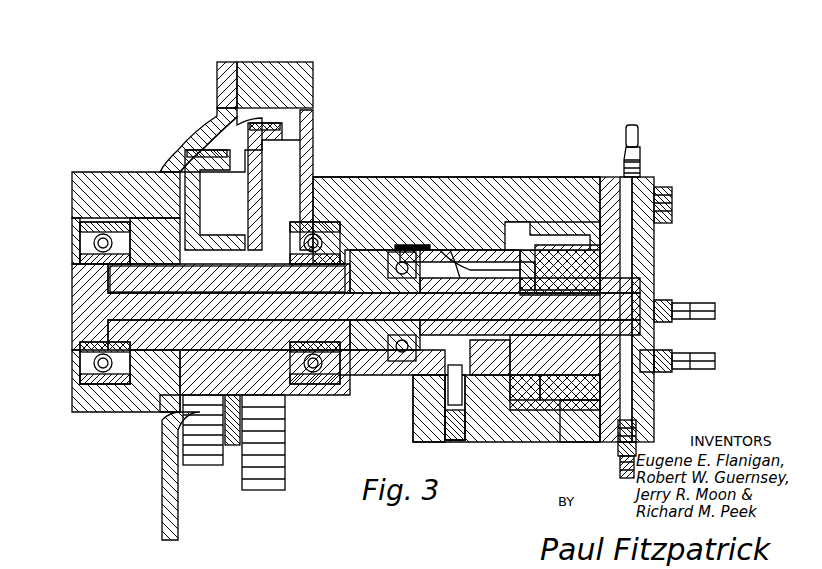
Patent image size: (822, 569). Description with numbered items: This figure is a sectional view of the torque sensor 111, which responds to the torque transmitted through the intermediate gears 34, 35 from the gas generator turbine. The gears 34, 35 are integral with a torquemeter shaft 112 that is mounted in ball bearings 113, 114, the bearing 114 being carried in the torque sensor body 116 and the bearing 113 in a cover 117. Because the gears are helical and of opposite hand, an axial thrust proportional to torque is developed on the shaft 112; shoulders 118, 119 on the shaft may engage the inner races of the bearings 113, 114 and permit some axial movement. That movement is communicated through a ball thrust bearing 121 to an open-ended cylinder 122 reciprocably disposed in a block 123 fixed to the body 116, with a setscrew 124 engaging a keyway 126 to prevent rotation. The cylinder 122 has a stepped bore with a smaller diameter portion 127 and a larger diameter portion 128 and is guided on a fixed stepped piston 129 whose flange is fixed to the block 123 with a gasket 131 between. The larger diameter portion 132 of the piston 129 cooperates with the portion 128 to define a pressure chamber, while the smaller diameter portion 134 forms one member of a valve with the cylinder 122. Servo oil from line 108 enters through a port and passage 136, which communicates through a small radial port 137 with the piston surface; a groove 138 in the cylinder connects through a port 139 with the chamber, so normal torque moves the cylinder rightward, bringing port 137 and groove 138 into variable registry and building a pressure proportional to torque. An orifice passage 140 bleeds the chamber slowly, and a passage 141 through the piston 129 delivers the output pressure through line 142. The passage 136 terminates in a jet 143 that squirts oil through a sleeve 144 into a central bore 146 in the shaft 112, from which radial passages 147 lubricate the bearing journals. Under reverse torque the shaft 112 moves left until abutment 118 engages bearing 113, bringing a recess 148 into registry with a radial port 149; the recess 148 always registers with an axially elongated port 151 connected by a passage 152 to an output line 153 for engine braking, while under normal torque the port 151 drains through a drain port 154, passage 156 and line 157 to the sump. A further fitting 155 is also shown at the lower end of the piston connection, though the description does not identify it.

The intermediate gear 34 is at (200, 140).
The intermediate gear 35 is at (285, 128).
The line 108 is at (715, 311).
The torque sensor 111 is at (204, 98).
The torquemeter shaft 112 is at (148, 245).
The ball bearing 113 is at (94, 243).
The ball bearing 114 is at (322, 225).
The torque sensor body 116 is at (313, 86).
The cover 117 is at (226, 62).
The shoulder 118 is at (130, 363).
The shoulder 119 is at (300, 270).
The ball thrust bearing 121 is at (388, 266).
The open-ended cylinder 122 is at (456, 236).
The block 123 is at (568, 177).
The setscrew 124 is at (440, 442).
The keyway 126 is at (440, 385).
The smaller diameter portion 127 is at (470, 425).
The larger diameter portion 128 is at (585, 442).
The fixed stepped piston 129 is at (654, 252).
The gasket 131 is at (603, 177).
The larger diameter portion 132 is at (565, 240).
The smaller diameter portion 134 is at (455, 245).
The port and passage 136 is at (654, 293).
The radial port 137 is at (555, 372).
The groove 138 is at (521, 401).
The port 139 is at (569, 401).
The orifice passage 140 is at (450, 250).
The passage 141 is at (652, 372).
The line 142 is at (715, 361).
The jet 143 is at (400, 357).
The sleeve 144 is at (326, 372).
The central bore 146 is at (215, 322).
The radial passage 147 is at (108, 282).
The recess 148 is at (552, 221).
The radial port 149 is at (460, 237).
The axially elongated port 151 is at (495, 370).
The passage 152 is at (636, 420).
The output line 153 is at (560, 258).
The drain port 154 is at (560, 272).
The fitting 155 is at (618, 468).
The passage 156 is at (640, 270).
The line 157 is at (640, 132).